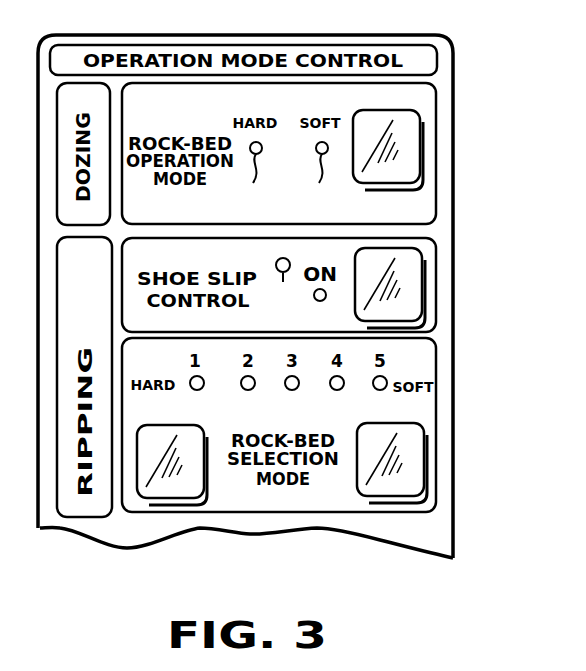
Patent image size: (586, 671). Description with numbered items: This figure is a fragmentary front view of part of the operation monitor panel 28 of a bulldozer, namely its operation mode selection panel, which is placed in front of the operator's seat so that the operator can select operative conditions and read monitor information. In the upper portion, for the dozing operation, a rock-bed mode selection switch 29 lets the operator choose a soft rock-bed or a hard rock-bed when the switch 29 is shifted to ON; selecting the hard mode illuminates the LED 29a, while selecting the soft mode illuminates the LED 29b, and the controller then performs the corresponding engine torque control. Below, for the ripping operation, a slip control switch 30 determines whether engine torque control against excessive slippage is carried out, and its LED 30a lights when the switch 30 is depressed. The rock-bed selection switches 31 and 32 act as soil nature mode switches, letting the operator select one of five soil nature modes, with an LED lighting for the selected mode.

The operation monitor panel 28 is at (453, 58).
The rock-bed mode selection switch 29 is at (410, 156).
The LED 29a is at (236, 177).
The LED 29b is at (319, 177).
The slip control switch 30 is at (405, 289).
The LED 30a is at (281, 289).
The rock-bed selection switch 31 is at (182, 480).
The rock-bed selection switch 32 is at (407, 465).